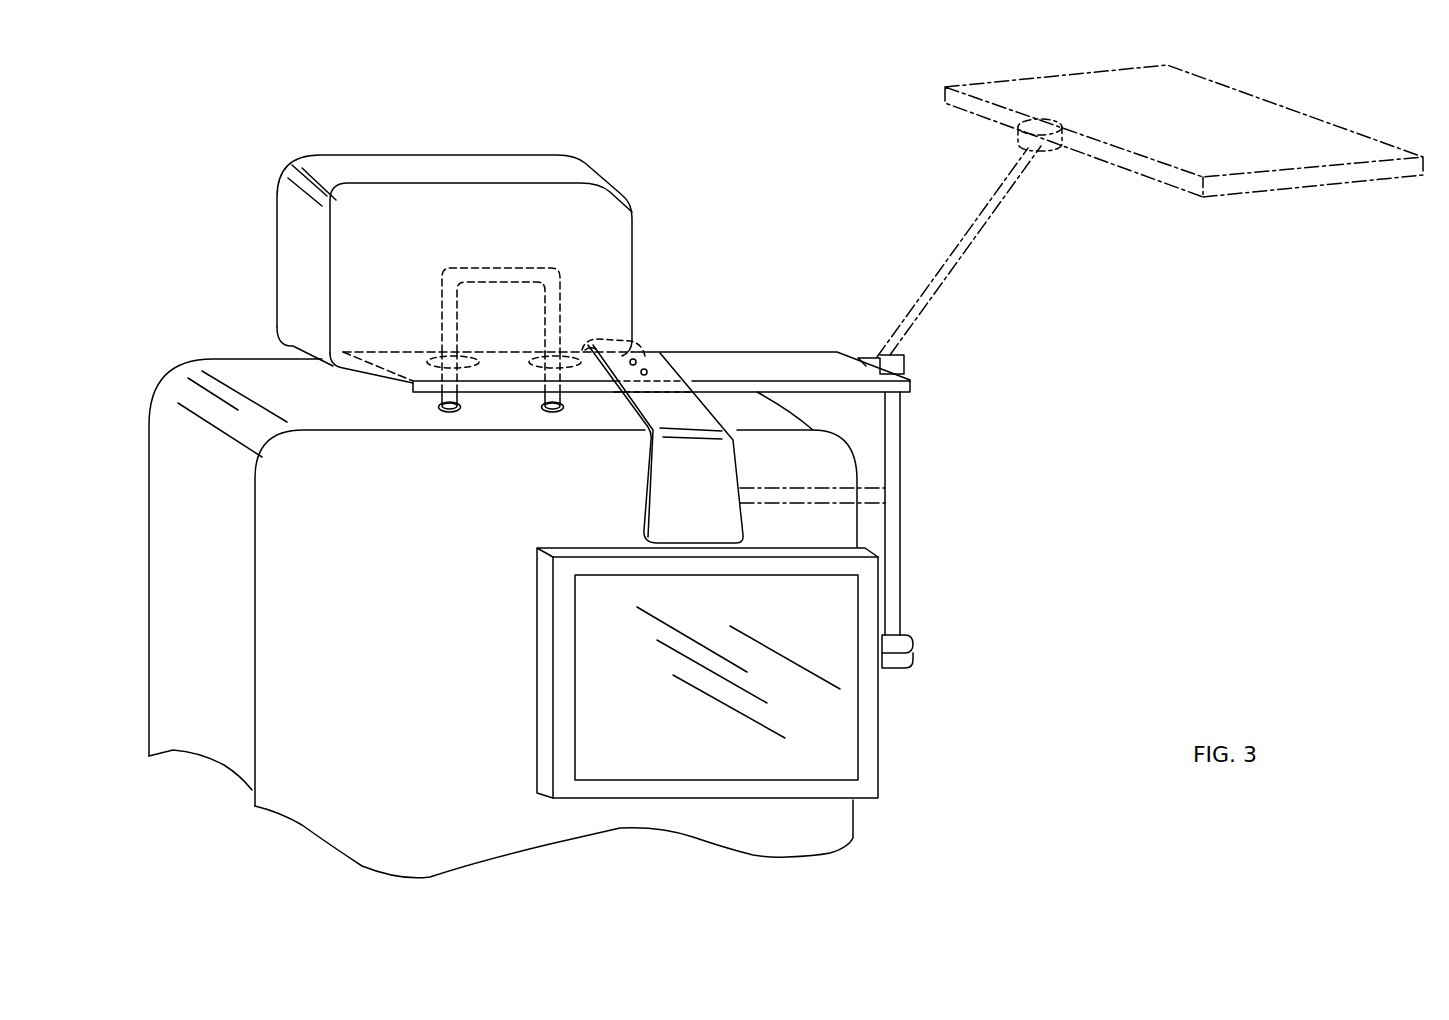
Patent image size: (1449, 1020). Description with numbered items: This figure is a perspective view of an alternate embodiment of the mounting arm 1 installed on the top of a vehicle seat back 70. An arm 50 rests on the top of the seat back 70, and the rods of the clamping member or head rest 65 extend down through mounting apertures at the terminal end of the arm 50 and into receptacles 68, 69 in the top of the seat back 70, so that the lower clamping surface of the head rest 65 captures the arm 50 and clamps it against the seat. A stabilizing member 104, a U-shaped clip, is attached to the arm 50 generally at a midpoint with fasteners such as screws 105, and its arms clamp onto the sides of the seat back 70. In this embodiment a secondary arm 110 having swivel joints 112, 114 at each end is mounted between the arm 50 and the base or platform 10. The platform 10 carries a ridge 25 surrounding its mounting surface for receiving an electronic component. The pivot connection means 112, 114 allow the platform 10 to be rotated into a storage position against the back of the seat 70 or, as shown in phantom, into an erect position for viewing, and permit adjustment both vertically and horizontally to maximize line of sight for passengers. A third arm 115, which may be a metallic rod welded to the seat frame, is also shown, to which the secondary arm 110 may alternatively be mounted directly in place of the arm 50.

The mounting arm 1 is at (776, 258).
The base or platform 10 is at (857, 792).
The ridge 25 is at (783, 793).
The arm 50 is at (733, 352).
The clamping member, upright member or head rest 65 is at (435, 167).
The receptacle 68 is at (462, 409).
The receptacle 69 is at (562, 409).
The support surface or seat back 70 is at (170, 525).
The stabilizing member 104 is at (670, 410).
The screws 105 is at (647, 371).
The secondary arm 110 is at (895, 530).
The swivel joint 112 is at (869, 355).
The swivel joint 114 is at (898, 645).
The third arm 115 is at (873, 488).